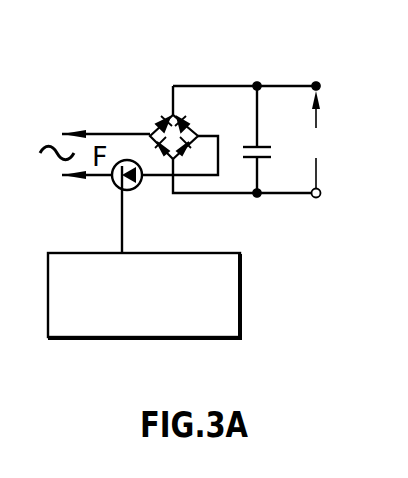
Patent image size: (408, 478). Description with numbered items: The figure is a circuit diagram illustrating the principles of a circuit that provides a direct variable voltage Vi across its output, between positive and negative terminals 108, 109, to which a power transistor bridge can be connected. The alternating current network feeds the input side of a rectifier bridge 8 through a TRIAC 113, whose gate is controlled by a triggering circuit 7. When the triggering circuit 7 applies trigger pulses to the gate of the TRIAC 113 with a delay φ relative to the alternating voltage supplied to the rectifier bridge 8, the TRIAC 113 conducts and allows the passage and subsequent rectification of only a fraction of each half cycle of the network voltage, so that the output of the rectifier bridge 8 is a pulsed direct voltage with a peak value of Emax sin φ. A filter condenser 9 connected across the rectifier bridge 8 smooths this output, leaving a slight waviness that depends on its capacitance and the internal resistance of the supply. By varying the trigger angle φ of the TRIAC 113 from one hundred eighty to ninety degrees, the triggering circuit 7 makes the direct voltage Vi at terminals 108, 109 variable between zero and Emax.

The triggering circuit 7 is at (228, 319).
The rectifier bridge 8 is at (171, 113).
The filter condenser 9 is at (270, 146).
The positive terminal 108 is at (318, 84).
The negative terminal 109 is at (316, 198).
The TRIAC 113 is at (116, 185).